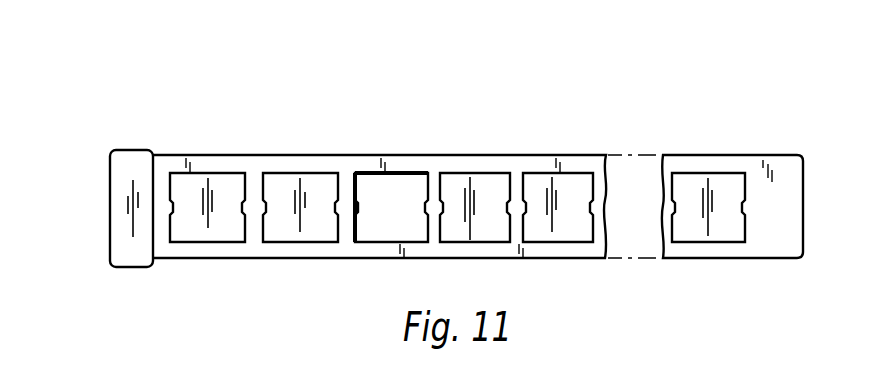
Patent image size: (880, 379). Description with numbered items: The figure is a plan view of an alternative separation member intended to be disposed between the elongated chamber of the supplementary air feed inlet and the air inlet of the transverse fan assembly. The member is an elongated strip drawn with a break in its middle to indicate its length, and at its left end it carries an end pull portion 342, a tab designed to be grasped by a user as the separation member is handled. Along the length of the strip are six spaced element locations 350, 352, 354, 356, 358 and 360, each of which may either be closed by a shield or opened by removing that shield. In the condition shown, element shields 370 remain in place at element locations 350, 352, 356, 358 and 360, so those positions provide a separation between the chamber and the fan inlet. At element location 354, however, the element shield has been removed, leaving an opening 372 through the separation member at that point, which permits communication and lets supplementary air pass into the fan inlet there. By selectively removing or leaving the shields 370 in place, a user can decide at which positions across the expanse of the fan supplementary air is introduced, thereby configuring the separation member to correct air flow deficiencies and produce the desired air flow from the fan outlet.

The end pull portion 342 is at (130, 170).
The element location 350 is at (217, 173).
The element location 352 is at (296, 173).
The element location 354 is at (407, 173).
The element location 356 is at (476, 173).
The element location 358 is at (581, 173).
The element location 360 is at (699, 173).
The element shield 370 is at (218, 235).
The opening 372 is at (361, 232).